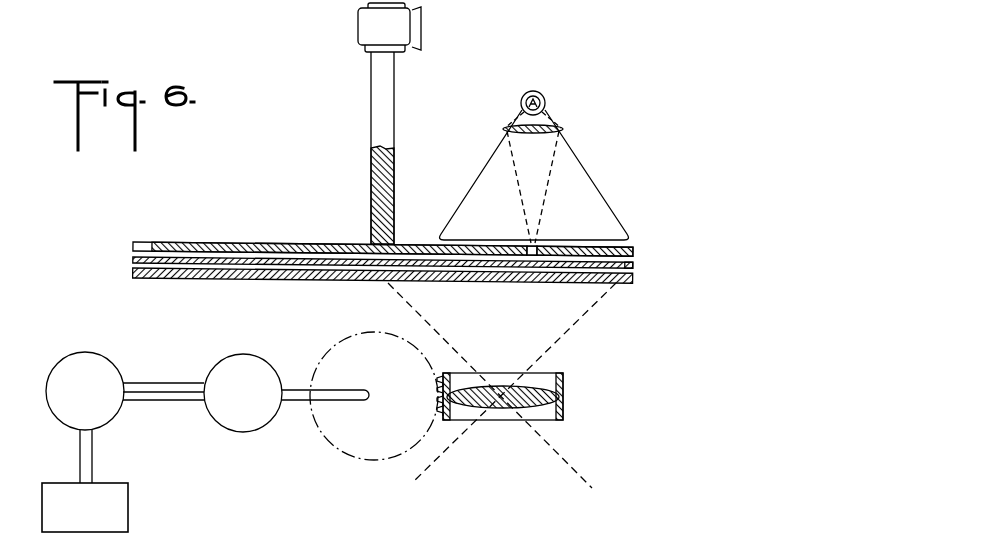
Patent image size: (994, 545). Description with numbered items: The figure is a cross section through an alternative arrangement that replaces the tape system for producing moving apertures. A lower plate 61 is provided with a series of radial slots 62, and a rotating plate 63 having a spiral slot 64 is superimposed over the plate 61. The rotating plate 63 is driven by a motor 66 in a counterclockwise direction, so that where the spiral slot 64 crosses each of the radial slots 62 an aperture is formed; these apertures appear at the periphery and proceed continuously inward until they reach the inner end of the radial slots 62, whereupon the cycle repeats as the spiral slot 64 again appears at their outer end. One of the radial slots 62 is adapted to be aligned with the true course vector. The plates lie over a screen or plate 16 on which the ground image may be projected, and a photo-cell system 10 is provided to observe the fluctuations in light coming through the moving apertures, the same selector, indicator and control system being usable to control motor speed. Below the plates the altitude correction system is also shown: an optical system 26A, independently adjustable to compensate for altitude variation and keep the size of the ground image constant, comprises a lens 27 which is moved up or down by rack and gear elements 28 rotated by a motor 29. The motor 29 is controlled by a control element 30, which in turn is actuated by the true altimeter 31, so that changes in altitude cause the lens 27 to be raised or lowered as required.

The motor 66 is at (368, 28).
The photo-cell system 10 is at (545, 98).
The rotating plate 63 is at (302, 242).
The spiral slot 64 is at (537, 244).
The plate 61 is at (315, 263).
The radial slots 62 is at (633, 260).
The screen or plate 16 is at (152, 278).
The lens 27 is at (499, 406).
The rack and gear elements 28 is at (442, 419).
The optical system 26A is at (350, 397).
The motor 29 is at (250, 363).
The control element 30 is at (113, 375).
The true altimeter 31 is at (54, 490).